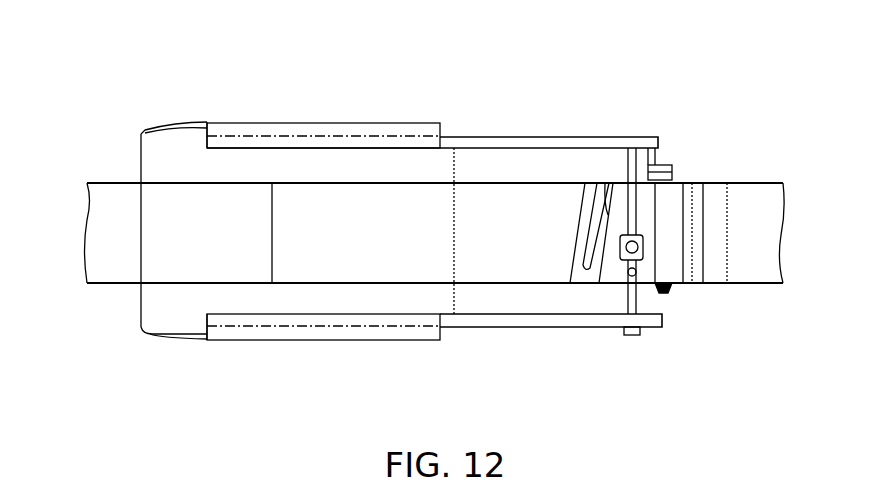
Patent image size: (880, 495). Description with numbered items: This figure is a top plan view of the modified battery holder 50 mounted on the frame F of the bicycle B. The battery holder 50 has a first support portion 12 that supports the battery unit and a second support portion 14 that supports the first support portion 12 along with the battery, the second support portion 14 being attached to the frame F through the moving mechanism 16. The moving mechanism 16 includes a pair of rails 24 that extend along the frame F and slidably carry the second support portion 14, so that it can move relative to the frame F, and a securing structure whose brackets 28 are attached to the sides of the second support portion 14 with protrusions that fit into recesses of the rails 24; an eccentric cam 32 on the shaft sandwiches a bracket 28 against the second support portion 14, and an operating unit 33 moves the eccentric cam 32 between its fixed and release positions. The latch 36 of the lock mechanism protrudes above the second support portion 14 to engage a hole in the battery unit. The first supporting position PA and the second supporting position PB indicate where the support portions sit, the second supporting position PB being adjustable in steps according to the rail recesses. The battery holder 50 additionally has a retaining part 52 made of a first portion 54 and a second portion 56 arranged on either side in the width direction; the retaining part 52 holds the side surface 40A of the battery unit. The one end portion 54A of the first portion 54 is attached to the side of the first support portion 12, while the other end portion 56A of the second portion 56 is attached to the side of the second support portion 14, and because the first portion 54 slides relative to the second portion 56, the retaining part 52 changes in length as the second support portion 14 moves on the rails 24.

The first support portion 12 is at (160, 127).
The second support portion 14 is at (606, 182).
The moving mechanism 16 is at (507, 369).
The rail 24 is at (498, 283).
The bracket 28 is at (666, 293).
The eccentric cam 32 is at (674, 172).
The operating unit 33 is at (652, 162).
The latch 36 is at (620, 248).
The side surface 40A is at (307, 135).
The battery holder 50 is at (126, 82).
The retaining part 52 is at (360, 124).
The first portion 54 is at (407, 135).
The one end portion 54A is at (212, 130).
The second portion 56 is at (472, 136).
The other end portion 56A is at (628, 328).
The bicycle B is at (747, 125).
The frame F is at (748, 183).
The first supporting position PA is at (207, 368).
The second supporting position PB is at (632, 368).